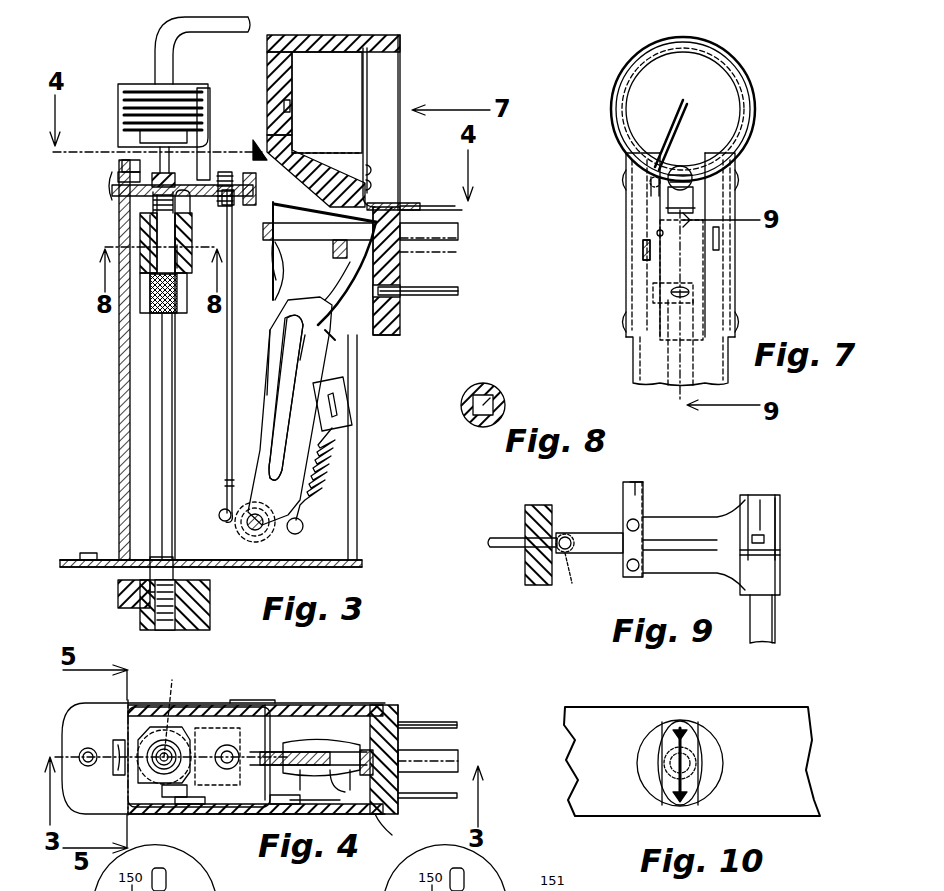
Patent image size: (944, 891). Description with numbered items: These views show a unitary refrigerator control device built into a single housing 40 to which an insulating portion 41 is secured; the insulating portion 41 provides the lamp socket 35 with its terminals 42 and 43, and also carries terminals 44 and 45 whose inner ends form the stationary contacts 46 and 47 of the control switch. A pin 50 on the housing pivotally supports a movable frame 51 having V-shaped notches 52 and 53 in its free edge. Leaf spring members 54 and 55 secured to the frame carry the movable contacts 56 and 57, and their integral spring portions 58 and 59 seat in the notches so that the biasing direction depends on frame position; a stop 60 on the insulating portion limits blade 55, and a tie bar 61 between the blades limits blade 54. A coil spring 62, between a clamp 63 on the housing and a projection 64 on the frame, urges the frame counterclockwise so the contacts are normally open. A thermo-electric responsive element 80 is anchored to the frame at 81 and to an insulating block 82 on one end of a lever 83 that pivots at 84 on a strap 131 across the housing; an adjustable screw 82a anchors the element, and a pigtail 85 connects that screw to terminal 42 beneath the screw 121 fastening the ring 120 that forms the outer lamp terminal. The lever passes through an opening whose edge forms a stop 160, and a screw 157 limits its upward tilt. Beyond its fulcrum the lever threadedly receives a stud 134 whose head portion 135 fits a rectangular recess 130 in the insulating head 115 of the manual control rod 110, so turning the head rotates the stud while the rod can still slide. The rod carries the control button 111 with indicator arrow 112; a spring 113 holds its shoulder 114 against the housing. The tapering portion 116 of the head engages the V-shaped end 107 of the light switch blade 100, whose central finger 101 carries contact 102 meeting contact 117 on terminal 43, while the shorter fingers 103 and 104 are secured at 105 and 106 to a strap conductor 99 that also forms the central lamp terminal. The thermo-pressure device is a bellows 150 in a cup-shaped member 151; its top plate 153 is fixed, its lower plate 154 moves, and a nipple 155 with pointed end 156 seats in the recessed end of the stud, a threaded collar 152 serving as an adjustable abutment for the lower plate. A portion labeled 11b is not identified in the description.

In FIG. 3, the knurled portion 11b is at (185, 295).
In FIG. 3, the socket 35 is at (345, 75).
In FIG. 7, the socket 35 is at (720, 100).
In FIG. 3, the housing 40 is at (130, 455).
In FIG. 7, the housing 40 is at (633, 355).
In FIG. 10, the housing 40 is at (755, 708).
In FIG. 4, the housing 40 is at (64, 712).
In FIG. 3, the insulating portion 41 is at (392, 335).
In FIG. 7, the insulating portion 41 is at (637, 328).
In FIG. 4, the insulating portion 41 is at (400, 718).
In FIG. 3, the terminal 42 is at (455, 207).
In FIG. 7, the terminal 42 is at (685, 205).
In FIG. 3, the terminal 43 is at (458, 291).
In FIG. 7, the terminal 43 is at (688, 292).
In FIG. 9, the terminal 43 is at (493, 550).
In FIG. 4, the terminal 43 is at (458, 755).
In FIG. 3, the terminal 44 is at (458, 232).
In FIG. 7, the terminal 44 is at (719, 240).
In FIG. 4, the terminal 44 is at (457, 725).
In FIG. 3, the terminal 45 is at (458, 252).
In FIG. 7, the terminal 45 is at (643, 255).
In FIG. 4, the terminal 45 is at (453, 798).
In FIG. 3, the stationary contact 46 is at (268, 252).
In FIG. 4, the stationary contact 46 is at (270, 746).
In FIG. 3, the stationary contact 47 is at (333, 250).
In FIG. 4, the stationary contact 47 is at (330, 785).
In FIG. 3, the pin 50 is at (248, 530).
In FIG. 4, the pin 50 is at (282, 705).
In FIG. 3, the movable frame 51 is at (268, 427).
In FIG. 3, the V-shaped notch 52 is at (272, 320).
In FIG. 3, the V-shaped notch 53 is at (332, 340).
In FIG. 3, the leaf spring member 54 is at (270, 345).
In FIG. 4, the leaf spring member 54 is at (298, 800).
In FIG. 3, the leaf spring member 55 is at (303, 353).
In FIG. 3, the movable contact 56 is at (275, 232).
In FIG. 3, the movable contact 57 is at (335, 238).
In FIG. 3, the spring portion 58 is at (276, 274).
In FIG. 3, the spring portion 59 is at (330, 295).
In FIG. 3, the stop 60 is at (340, 273).
In FIG. 3, the tie bar 61 is at (262, 205).
In FIG. 4, the tie bar 61 is at (320, 745).
In FIG. 3, the coil spring 62 is at (318, 478).
In FIG. 3, the clamp 63 is at (350, 415).
In FIG. 3, the projection 64 is at (302, 530).
In FIG. 3, the thermo-electric responsive element 80 is at (228, 452).
In FIG. 3, the anchorage 81 is at (215, 506).
In FIG. 3, the insulating block 82 is at (235, 215).
In FIG. 4, the insulating block 82 is at (215, 728).
In FIG. 3, the adjustable screw 82a is at (225, 172).
In FIG. 4, the adjustable screw 82a is at (227, 745).
In FIG. 3, the lever 83 is at (175, 178).
In FIG. 4, the lever 83 is at (150, 740).
In FIG. 3, the pivot 84 is at (220, 140).
In FIG. 3, the pigtail 85 is at (248, 173).
In FIG. 4, the pigtail 85 is at (285, 814).
In FIG. 3, the metallic strap conductor 99 is at (290, 105).
In FIG. 7, the metallic strap conductor 99 is at (678, 96).
In FIG. 9, the metallic strap conductor 99 is at (636, 484).
In FIG. 4, the metallic strap conductor 99 is at (300, 804).
In FIG. 9, the resilient spring blade 100 is at (733, 499).
In FIG. 9, the central spring finger 101 is at (593, 533).
In FIG. 4, the central spring finger 101 is at (255, 814).
In FIG. 9, the contact 102 is at (572, 568).
In FIG. 4, the contact 102 is at (391, 833).
In FIG. 9, the spring finger 103 is at (672, 525).
In FIG. 9, the spring finger 104 is at (710, 560).
In FIG. 9, the securing point 105 is at (623, 520).
In FIG. 9, the securing point 106 is at (630, 572).
In FIG. 9, the V-shaped end 107 is at (764, 540).
In FIG. 4, the V-shaped end 107 is at (168, 797).
In FIG. 3, the rod 110 is at (150, 400).
In FIG. 9, the rod 110 is at (775, 622).
In FIG. 3, the control button 111 is at (205, 618).
In FIG. 10, the control button 111 is at (700, 760).
In FIG. 4, the control button 111 is at (177, 711).
In FIG. 10, the indicator arrow 112 is at (675, 742).
In FIG. 3, the spring 113 is at (150, 567).
In FIG. 3, the shoulder 114 is at (152, 558).
In FIG. 3, the insulating head 115 is at (196, 260).
In FIG. 7, the insulating head 115 is at (657, 233).
In FIG. 8, the insulating head 115 is at (505, 410).
In FIG. 9, the insulating head 115 is at (775, 500).
In FIG. 9, the tapering portion 116 is at (778, 553).
In FIG. 9, the contact 117 is at (565, 536).
In FIG. 4, the contact 117 is at (350, 804).
In FIG. 3, the ring 120 is at (363, 110).
In FIG. 7, the ring 120 is at (715, 70).
In FIG. 3, the screw 121 is at (372, 176).
In FIG. 7, the screw 121 is at (680, 165).
In FIG. 3, the recess 130 is at (157, 244).
In FIG. 8, the recess 130 is at (492, 388).
In FIG. 3, the strap 131 is at (190, 205).
In FIG. 4, the strap 131 is at (190, 804).
In FIG. 3, the stud 134 is at (153, 206).
In FIG. 3, the head portion 135 is at (150, 232).
In FIG. 3, the bellows 150 is at (130, 88).
In FIG. 3, the cup-shaped member 151 is at (120, 98).
In FIG. 3, the collar 152 is at (122, 168).
In FIG. 3, the top plate 153 is at (190, 80).
In FIG. 3, the lower plate 154 is at (124, 118).
In FIG. 3, the nipple 155 is at (140, 137).
In FIG. 4, the nipple 155 is at (167, 752).
In FIG. 3, the pointed outer end 156 is at (118, 178).
In FIG. 3, the screw 157 is at (160, 158).
In FIG. 4, the screw 157 is at (115, 750).
In FIG. 3, the stop 160 is at (112, 194).